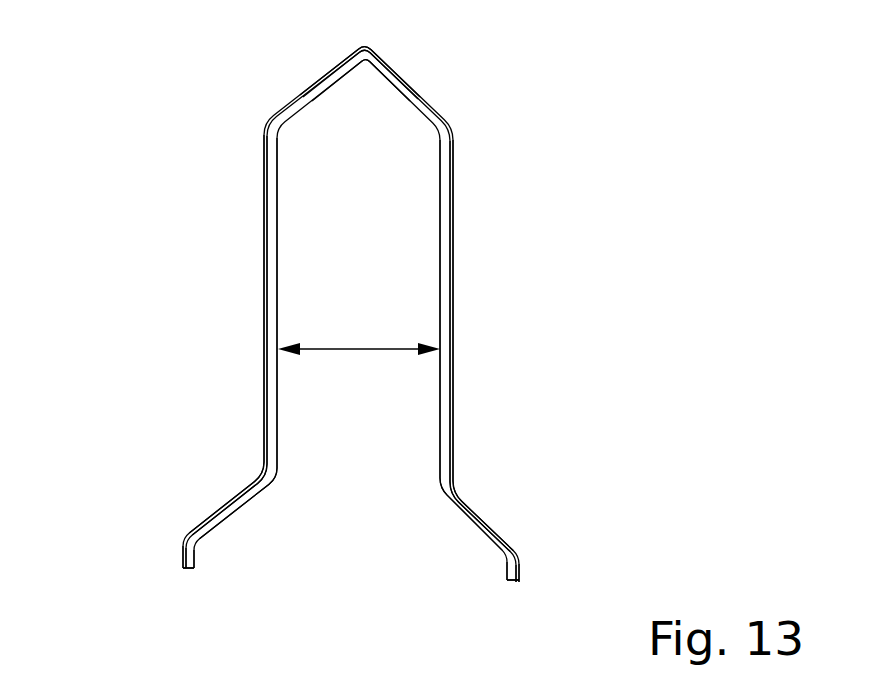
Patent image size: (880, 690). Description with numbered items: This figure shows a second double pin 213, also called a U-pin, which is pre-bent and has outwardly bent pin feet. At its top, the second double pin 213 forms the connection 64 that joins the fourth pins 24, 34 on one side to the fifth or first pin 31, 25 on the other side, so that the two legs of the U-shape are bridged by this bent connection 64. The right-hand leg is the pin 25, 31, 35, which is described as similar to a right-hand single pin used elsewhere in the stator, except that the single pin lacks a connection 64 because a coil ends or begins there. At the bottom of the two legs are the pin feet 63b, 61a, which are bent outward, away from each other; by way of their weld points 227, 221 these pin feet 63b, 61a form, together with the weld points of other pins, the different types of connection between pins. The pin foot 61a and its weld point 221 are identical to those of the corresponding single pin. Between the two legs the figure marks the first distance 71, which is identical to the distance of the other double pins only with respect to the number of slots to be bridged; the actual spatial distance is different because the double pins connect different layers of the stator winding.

The second double pin 213 is at (258, 68).
The connection 64 is at (364, 52).
The fourth pin 24 is at (162, 301).
The fourth pin 34 is at (268, 310).
The first pin 25 is at (577, 311).
The fifth pin 31 is at (577, 311).
The pin 35 is at (443, 303).
The pin foot 63b is at (237, 506).
The pin foot 61a is at (473, 521).
The weld point 227 is at (190, 560).
The weld point 221 is at (512, 573).
The first distance 71 is at (360, 350).